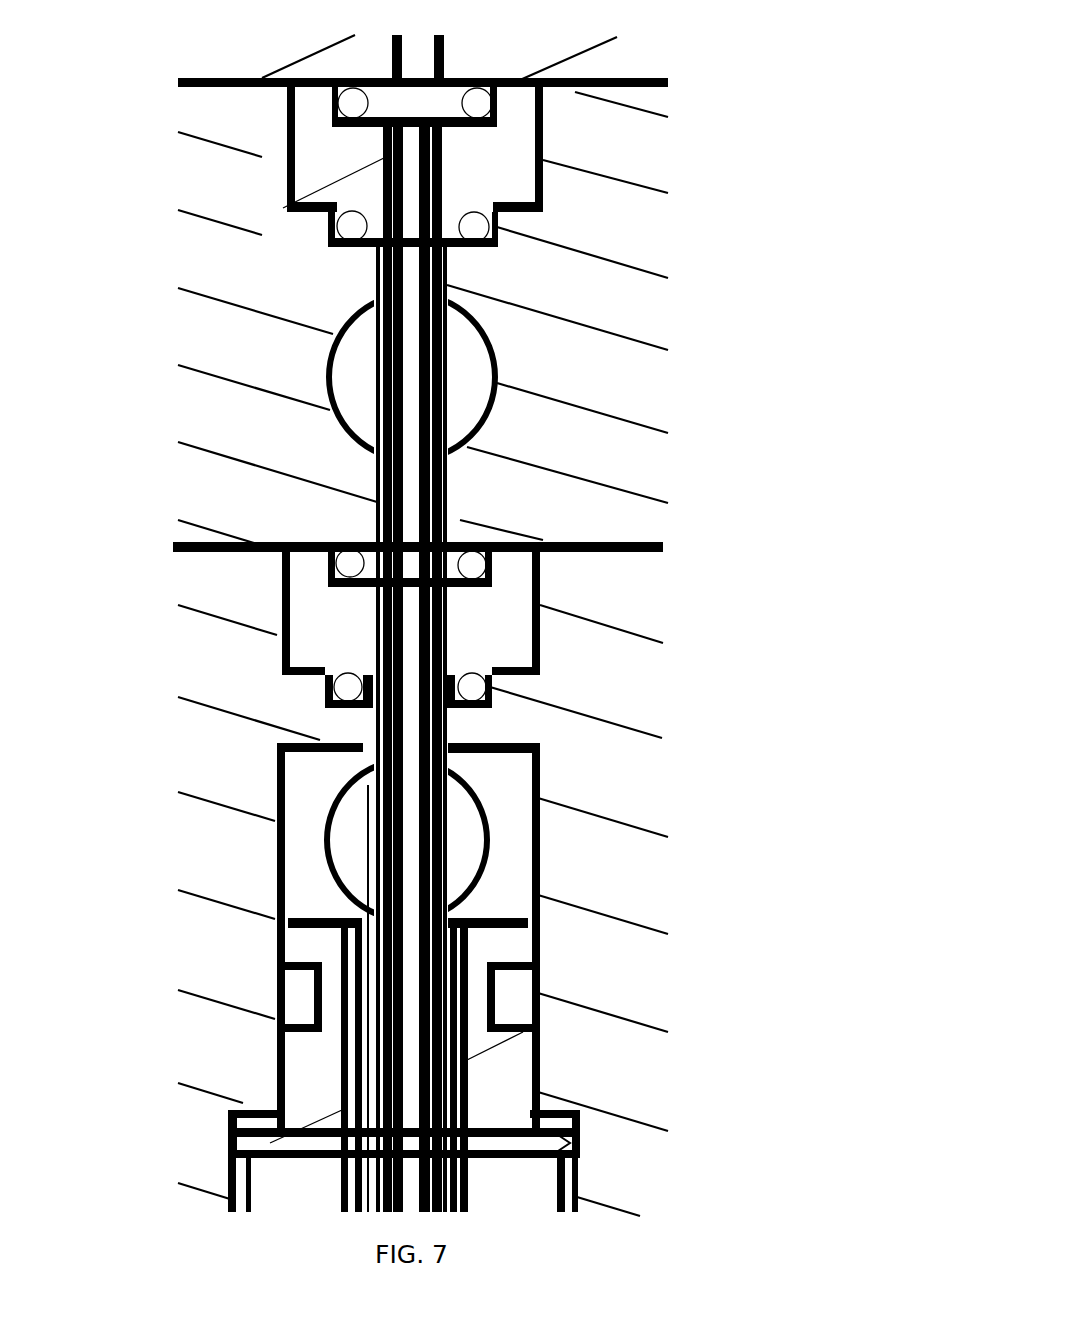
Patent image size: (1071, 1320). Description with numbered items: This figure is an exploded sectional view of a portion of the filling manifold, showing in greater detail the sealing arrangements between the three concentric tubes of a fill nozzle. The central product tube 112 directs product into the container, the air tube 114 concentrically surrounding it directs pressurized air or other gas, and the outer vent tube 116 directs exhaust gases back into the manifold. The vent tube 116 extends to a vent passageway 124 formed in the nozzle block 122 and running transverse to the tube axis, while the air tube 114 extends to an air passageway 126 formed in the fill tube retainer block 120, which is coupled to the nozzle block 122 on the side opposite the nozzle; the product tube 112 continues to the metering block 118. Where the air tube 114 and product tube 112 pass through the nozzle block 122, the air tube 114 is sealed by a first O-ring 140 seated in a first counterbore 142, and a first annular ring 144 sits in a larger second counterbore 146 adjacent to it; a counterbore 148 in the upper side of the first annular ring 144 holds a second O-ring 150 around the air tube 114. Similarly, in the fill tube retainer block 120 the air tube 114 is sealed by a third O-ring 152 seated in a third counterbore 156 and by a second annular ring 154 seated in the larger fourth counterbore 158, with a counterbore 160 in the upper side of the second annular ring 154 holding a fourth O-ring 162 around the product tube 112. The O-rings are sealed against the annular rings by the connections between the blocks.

The product tube 112 is at (420, 55).
The air tube 114 is at (445, 483).
The vent tube 116 is at (544, 729).
The metering block 118 is at (630, 66).
The fill tube retainer block 120 is at (625, 300).
The nozzle block 122 is at (650, 800).
The vent passageway 124 is at (558, 840).
The air passageway 126 is at (557, 377).
The first O-ring 140 is at (557, 686).
The first counterbore 142 is at (627, 711).
The first annular ring 144 is at (534, 613).
The second counterbore 146 is at (282, 666).
The counterbore 148 is at (330, 587).
The second O-ring 150 is at (486, 566).
The third O-ring 152 is at (628, 234).
The second annular ring 154 is at (530, 149).
The third counterbore 156 is at (330, 239).
The fourth counterbore 158 is at (283, 208).
The counterbore 160 is at (348, 104).
The fourth O-ring 162 is at (493, 107).